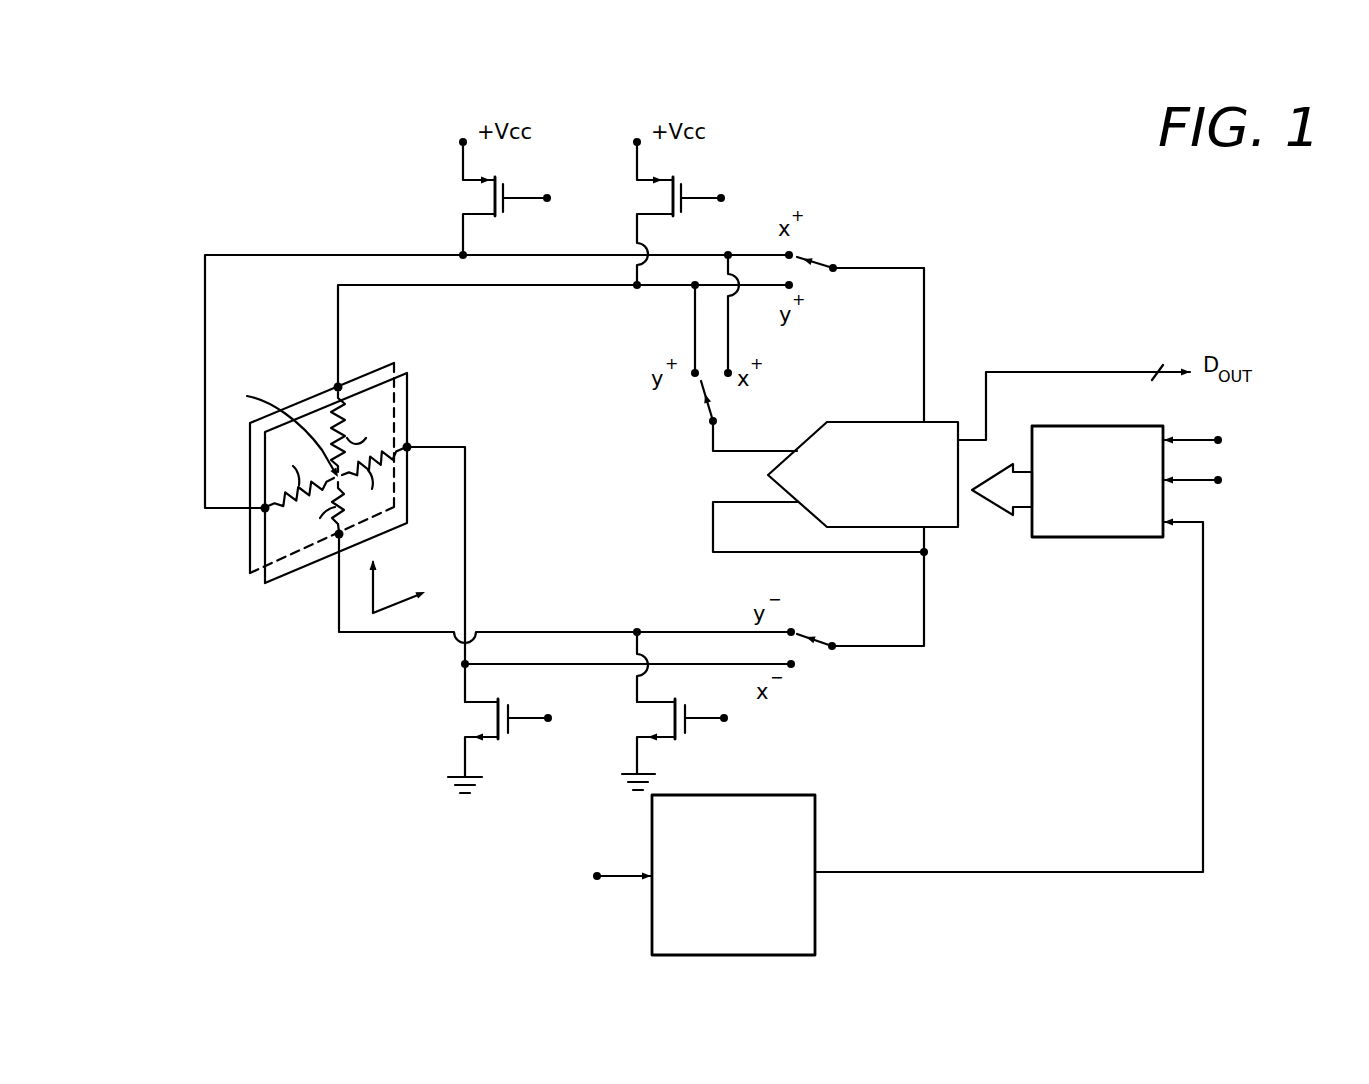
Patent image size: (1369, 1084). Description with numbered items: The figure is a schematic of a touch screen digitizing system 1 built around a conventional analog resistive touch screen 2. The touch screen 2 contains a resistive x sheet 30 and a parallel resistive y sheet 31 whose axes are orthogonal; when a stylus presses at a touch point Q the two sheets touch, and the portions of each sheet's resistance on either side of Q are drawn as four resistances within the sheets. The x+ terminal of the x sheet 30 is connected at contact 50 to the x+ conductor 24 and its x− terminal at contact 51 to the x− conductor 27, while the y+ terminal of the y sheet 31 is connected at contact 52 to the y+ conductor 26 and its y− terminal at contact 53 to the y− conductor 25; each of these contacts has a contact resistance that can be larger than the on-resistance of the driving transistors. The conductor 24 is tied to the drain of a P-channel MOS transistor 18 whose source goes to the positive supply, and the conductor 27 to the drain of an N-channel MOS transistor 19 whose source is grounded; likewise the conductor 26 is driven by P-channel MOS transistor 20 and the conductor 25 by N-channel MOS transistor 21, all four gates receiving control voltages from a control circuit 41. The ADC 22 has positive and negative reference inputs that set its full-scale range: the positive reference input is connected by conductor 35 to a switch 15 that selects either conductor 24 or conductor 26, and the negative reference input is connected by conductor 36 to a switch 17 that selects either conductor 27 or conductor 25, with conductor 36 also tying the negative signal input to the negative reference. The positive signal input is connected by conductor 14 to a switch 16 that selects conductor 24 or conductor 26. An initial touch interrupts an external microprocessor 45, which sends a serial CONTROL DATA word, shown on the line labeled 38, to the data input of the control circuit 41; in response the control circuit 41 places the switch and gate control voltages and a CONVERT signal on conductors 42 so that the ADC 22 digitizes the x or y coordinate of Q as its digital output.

The touch screen digitizing system 1 is at (322, 801).
The analog resistive touch screen assembly 2 is at (338, 464).
The conductor 14 is at (727, 452).
The switch 15 is at (821, 262).
The switch 16 is at (711, 410).
The switch 17 is at (822, 650).
The P-channel MOS transistor 18 is at (463, 214).
The N-channel MOS transistor 19 is at (465, 717).
The P-channel MOS transistor 20 is at (637, 214).
The N-channel MOS transistor 21 is at (637, 714).
The ADC 22 is at (868, 422).
The x+ conductor 24 is at (281, 255).
The y− conductor 25 is at (543, 632).
The y+ conductor 26 is at (398, 286).
The x− conductor 27 is at (467, 528).
The x sheet 30 is at (408, 397).
The y sheet 31 is at (377, 368).
The conductor 35 is at (924, 345).
The conductor 36 is at (925, 608).
The control data line 38 is at (1073, 873).
The control circuit 41 is at (1097, 538).
The conductors 42 is at (993, 510).
The external microprocessor 45 is at (650, 932).
The contact 50 is at (264, 510).
The contact 51 is at (409, 450).
The contact 52 is at (340, 385).
The contact 53 is at (336, 537).